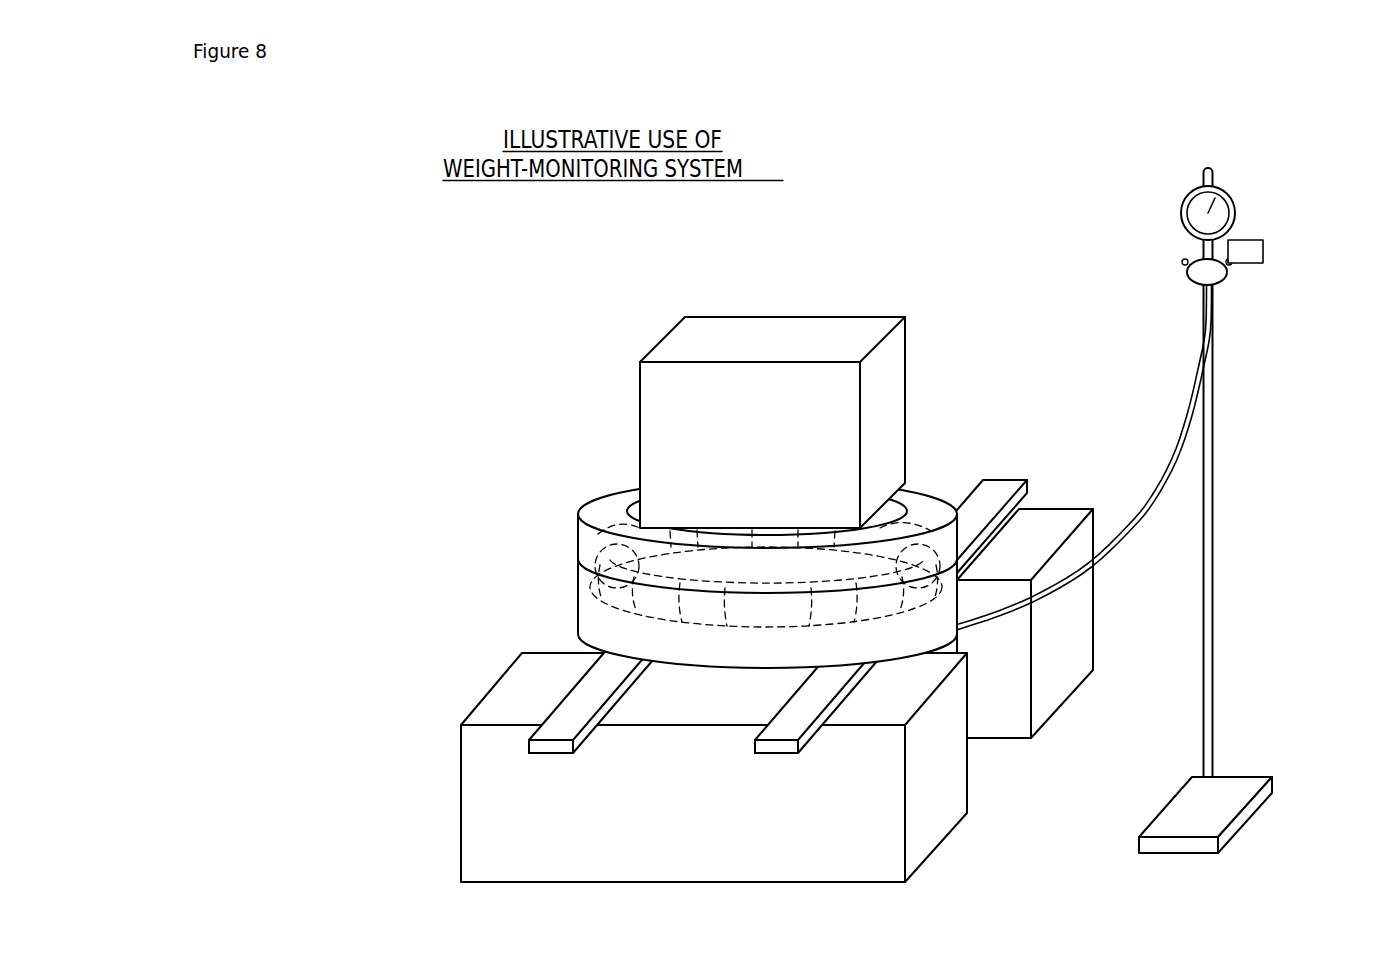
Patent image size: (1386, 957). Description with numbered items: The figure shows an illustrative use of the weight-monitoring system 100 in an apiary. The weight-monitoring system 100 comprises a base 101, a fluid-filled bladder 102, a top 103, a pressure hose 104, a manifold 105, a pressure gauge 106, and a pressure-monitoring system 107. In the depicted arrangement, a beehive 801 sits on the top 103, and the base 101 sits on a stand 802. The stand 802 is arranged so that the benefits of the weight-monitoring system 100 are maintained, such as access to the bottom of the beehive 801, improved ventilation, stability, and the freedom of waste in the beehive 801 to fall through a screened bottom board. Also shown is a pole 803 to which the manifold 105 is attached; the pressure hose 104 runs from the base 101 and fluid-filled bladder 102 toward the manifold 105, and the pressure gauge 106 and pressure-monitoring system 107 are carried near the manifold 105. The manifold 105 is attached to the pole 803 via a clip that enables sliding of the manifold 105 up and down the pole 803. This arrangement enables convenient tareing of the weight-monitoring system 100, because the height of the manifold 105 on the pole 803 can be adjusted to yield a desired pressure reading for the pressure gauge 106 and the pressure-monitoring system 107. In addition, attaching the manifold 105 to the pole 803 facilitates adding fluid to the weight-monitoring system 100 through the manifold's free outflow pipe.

The weight-monitoring system 100 is at (894, 411).
The base 101 is at (702, 574).
The fluid-filled bladder 102 is at (718, 575).
The top 103 is at (741, 526).
The pressure hose 104 is at (1079, 457).
The manifold 105 is at (1172, 288).
The pressure gauge 106 is at (1173, 198).
The pressure-monitoring system 107 is at (1284, 236).
The beehive 801 is at (750, 415).
The stand 802 is at (803, 700).
The pole 803 is at (1212, 510).